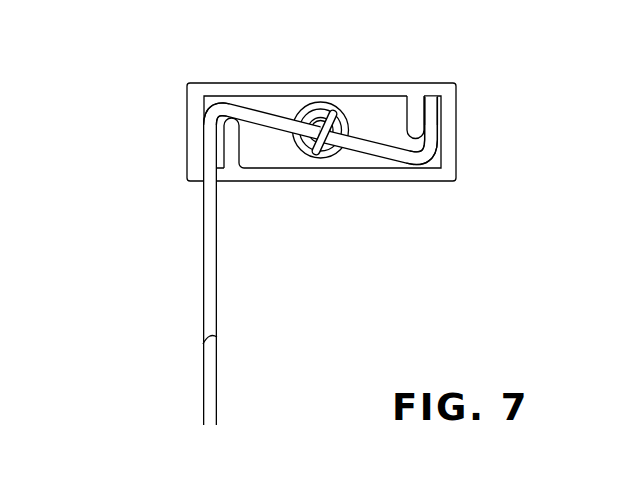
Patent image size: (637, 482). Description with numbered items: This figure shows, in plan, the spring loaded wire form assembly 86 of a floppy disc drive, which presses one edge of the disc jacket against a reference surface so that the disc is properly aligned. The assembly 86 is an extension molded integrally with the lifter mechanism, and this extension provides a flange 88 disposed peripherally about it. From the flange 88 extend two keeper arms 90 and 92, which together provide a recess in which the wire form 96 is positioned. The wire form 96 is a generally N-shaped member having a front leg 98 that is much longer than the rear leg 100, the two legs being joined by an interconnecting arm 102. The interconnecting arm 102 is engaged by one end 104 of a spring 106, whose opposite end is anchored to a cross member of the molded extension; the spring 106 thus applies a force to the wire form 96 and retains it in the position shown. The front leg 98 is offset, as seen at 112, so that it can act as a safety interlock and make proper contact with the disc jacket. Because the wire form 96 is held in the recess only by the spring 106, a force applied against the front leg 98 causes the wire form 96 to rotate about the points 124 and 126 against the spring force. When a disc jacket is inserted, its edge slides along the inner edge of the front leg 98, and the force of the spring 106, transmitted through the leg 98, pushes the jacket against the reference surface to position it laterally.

The spring loaded wire form assembly 86 is at (294, 212).
The flange 88 is at (452, 141).
The keeper arm 90 is at (407, 122).
The keeper arm 92 is at (238, 135).
The wire form 96 is at (422, 157).
The front leg 98 is at (203, 200).
The rear leg 100 is at (433, 115).
The interconnecting arm 102 is at (372, 148).
The end of spring 104 is at (303, 112).
The spring 106 is at (322, 108).
The offset 112 is at (217, 337).
The point 124 is at (432, 97).
The point 126 is at (222, 103).